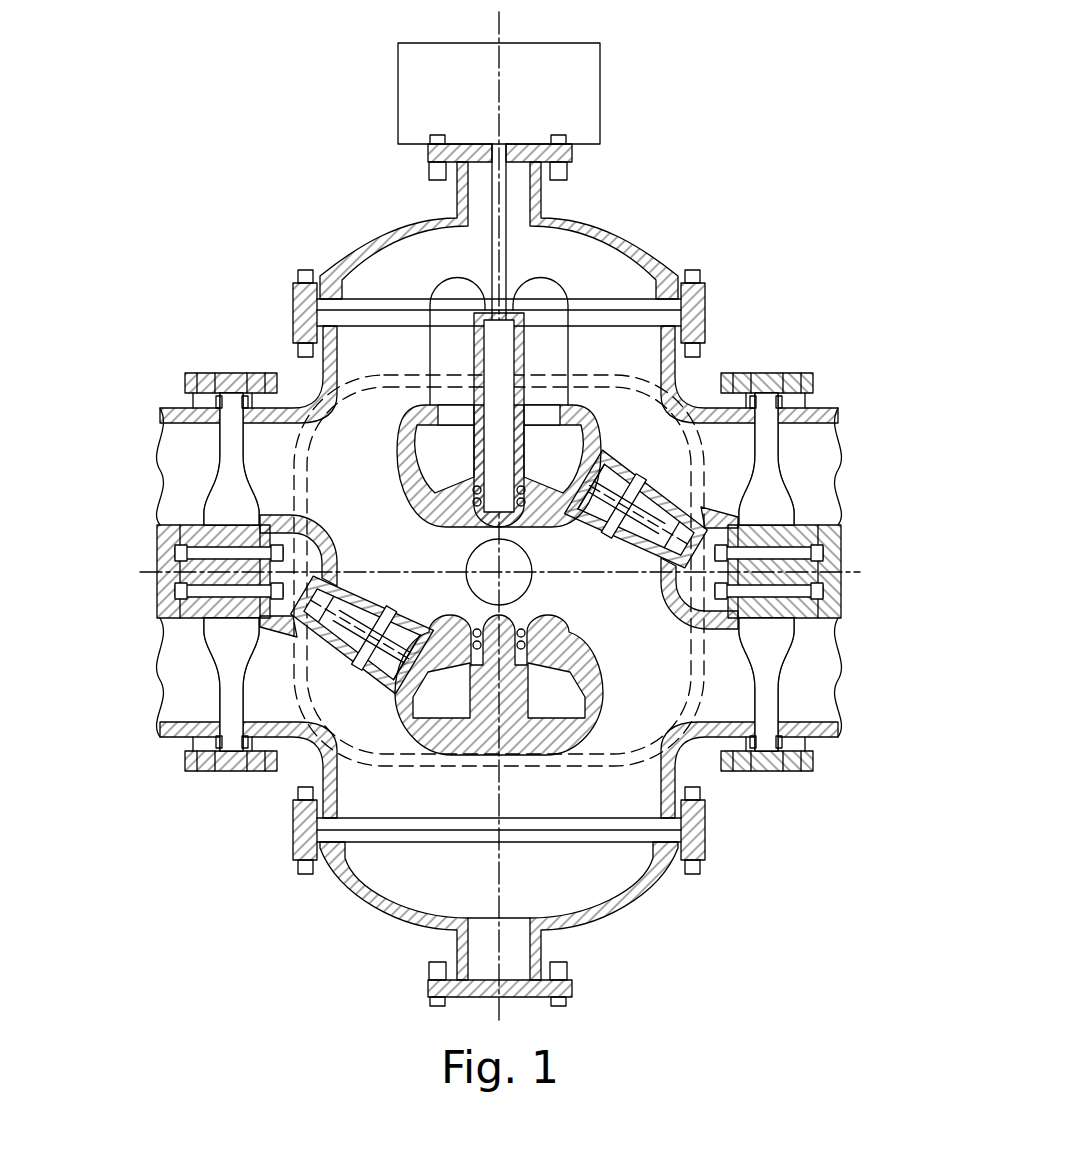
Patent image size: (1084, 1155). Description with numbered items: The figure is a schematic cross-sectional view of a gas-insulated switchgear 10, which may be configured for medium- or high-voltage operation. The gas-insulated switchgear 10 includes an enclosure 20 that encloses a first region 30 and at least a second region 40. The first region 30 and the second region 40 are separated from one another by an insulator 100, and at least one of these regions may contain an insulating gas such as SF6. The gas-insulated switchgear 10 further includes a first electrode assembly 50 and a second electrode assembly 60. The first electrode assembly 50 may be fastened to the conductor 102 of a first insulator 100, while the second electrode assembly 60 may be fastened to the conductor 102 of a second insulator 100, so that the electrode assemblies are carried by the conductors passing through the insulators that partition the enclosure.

The gas-insulated switchgear 10 is at (502, 517).
The enclosure 20 is at (683, 385).
The first region 30 is at (365, 462).
The second region 40 is at (183, 693).
The first electrode assembly 50 is at (572, 743).
The second electrode assembly 60 is at (588, 407).
The insulator 100 is at (220, 464).
The conductor 102 is at (214, 534).